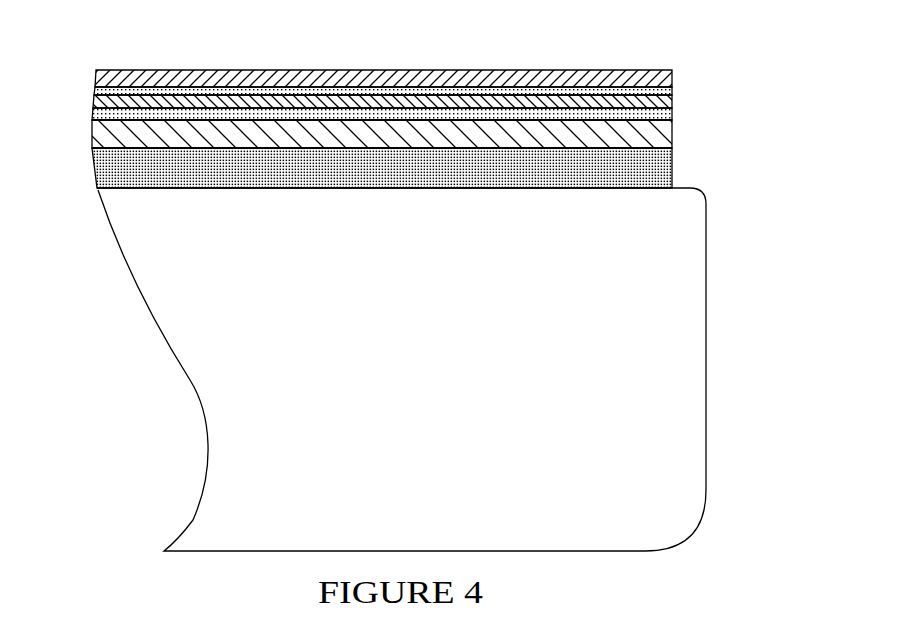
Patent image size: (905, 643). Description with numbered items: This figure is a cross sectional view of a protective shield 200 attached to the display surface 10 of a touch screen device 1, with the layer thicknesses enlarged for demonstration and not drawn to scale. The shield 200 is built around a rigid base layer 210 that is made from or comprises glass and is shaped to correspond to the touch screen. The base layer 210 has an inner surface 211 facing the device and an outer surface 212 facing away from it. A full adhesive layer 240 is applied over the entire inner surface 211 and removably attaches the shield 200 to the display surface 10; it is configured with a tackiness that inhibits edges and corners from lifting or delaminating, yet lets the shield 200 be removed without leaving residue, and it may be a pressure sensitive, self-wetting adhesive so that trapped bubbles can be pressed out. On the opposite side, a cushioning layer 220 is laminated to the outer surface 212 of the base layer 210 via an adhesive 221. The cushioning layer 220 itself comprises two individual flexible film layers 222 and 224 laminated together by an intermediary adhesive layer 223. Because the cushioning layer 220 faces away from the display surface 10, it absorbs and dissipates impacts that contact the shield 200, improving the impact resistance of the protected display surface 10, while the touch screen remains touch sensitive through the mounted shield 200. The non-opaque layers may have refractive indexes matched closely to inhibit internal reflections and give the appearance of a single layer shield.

The device 1 is at (700, 346).
The display surface 10 is at (270, 188).
The shield 200 is at (381, 50).
The base layer 210 is at (672, 130).
The inner surface 211 is at (382, 162).
The outer surface 212 is at (175, 107).
The cushioning layer 220 is at (678, 70).
The adhesive 221 is at (92, 115).
The layer 222 is at (93, 106).
The adhesive layer 223 is at (94, 91).
The layer 224 is at (95, 78).
The adhesive layer 240 is at (672, 167).